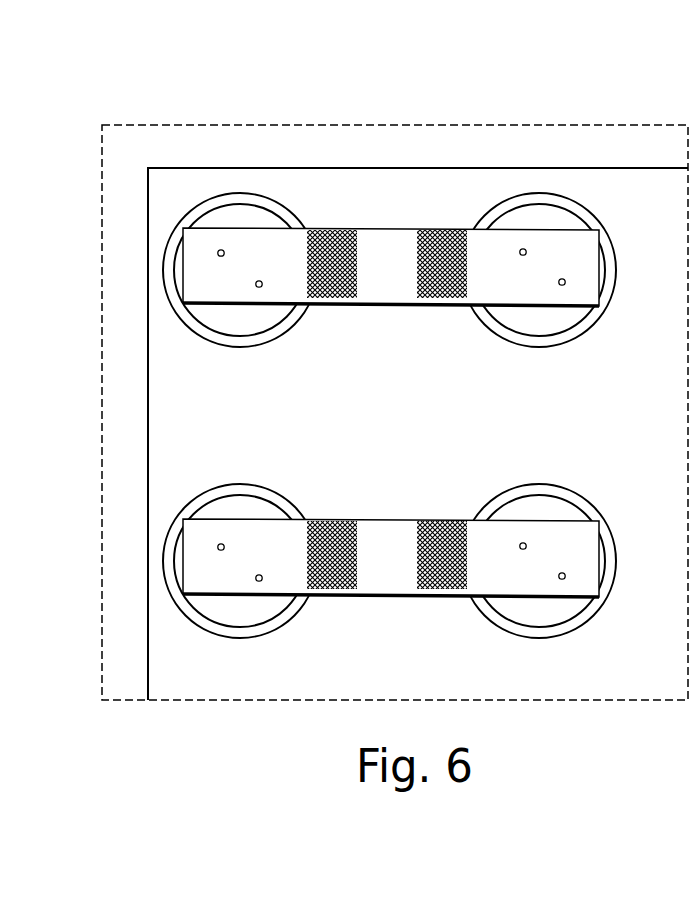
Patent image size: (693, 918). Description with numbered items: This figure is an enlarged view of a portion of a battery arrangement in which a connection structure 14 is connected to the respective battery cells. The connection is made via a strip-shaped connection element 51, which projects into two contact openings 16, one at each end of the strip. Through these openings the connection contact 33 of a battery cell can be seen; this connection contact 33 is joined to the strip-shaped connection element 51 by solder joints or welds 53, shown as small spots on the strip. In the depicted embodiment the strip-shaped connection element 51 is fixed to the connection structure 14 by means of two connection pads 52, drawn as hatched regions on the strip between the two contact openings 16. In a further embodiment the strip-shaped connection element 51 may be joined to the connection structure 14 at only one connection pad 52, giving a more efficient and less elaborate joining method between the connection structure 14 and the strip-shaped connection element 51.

The connection structure 14 is at (320, 195).
The contact opening 16 is at (578, 210).
The connection contact 33 is at (237, 212).
The strip-shaped connection element 51 is at (390, 245).
The connection pad 52 is at (332, 303).
The solder joint or weld 53 is at (562, 286).